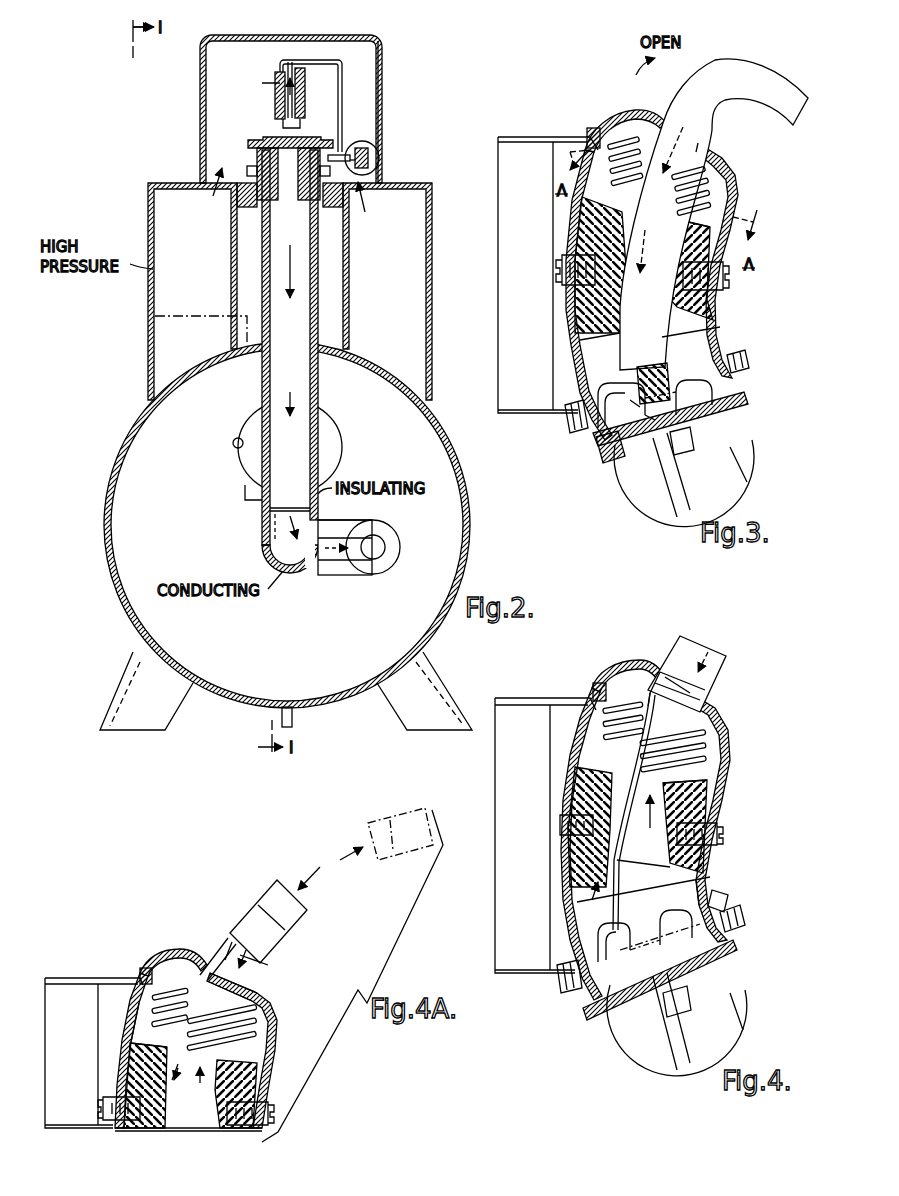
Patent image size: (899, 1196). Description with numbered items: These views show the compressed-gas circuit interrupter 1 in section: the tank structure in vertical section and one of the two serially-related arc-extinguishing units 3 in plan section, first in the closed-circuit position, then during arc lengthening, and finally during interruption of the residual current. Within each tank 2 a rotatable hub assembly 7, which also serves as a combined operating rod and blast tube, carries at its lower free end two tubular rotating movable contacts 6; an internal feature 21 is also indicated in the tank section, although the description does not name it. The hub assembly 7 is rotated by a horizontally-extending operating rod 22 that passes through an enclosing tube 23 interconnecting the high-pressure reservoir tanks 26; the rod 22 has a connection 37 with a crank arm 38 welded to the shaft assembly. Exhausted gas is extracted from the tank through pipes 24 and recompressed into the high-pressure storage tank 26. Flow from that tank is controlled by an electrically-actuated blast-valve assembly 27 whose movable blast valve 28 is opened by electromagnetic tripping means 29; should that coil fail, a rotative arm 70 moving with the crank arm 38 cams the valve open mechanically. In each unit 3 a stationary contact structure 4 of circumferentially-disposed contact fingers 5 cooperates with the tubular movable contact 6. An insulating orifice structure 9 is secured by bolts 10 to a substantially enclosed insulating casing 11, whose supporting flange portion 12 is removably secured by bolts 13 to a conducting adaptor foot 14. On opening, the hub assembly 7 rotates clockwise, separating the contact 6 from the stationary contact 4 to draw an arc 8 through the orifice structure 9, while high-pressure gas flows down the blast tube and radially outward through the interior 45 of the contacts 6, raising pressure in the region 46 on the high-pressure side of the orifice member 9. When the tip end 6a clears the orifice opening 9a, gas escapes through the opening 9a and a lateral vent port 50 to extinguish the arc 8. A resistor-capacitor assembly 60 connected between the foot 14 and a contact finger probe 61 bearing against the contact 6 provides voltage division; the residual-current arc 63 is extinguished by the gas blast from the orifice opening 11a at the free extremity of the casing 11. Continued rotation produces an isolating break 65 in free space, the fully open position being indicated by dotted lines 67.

In FIG. 2, the circuit interrupter 1 is at (398, 120).
In FIG. 2, the tank 2 is at (470, 545).
In FIG. 2, the arc-extinguishing unit 3 is at (335, 575).
In FIG. 3, the arc-extinguishing unit 3 is at (747, 334).
In FIG. 4, the arc-extinguishing unit 3 is at (747, 810).
In FIG. 4A, the arc-extinguishing unit 3 is at (137, 961).
In FIG. 3, the stationary contact structure 4 is at (676, 378).
In FIG. 4, the stationary contact structure 4 is at (670, 928).
In FIG. 3, the contact fingers 5 is at (690, 388).
In FIG. 4, the contact fingers 5 is at (626, 945).
In FIG. 2, the tubular rotating movable contact 6 is at (358, 530).
In FIG. 3, the tubular rotating movable contact 6 is at (622, 328).
In FIG. 4, the tubular rotating movable contact 6 is at (716, 677).
In FIG. 4A, the tubular rotating movable contact 6 is at (257, 897).
In FIG. 3, the tip end 6a is at (606, 449).
In FIG. 4, the tip end 6a is at (718, 724).
In FIG. 4A, the tip end 6a is at (258, 963).
In FIG. 2, the rotatable hub assembly 7 is at (327, 384).
In FIG. 4, the arc 8 is at (638, 768).
In FIG. 3, the insulating orifice structure 9 is at (703, 300).
In FIG. 4, the insulating orifice structure 9 is at (700, 818).
In FIG. 4A, the insulating orifice structure 9 is at (238, 1064).
In FIG. 3, the orifice opening 9a is at (672, 222).
In FIG. 4, the orifice opening 9a is at (716, 780).
In FIG. 4A, the orifice opening 9a is at (168, 1050).
In FIG. 3, the bolts 10 is at (730, 274).
In FIG. 4, the bolts 10 is at (560, 822).
In FIG. 4A, the bolts 10 is at (103, 1100).
In FIG. 2, the insulating casing 11 is at (322, 520).
In FIG. 4, the insulating casing 11 is at (708, 866).
In FIG. 4A, the insulating casing 11 is at (130, 1000).
In FIG. 2, the orifice opening 11a is at (382, 540).
In FIG. 3, the orifice opening 11a is at (702, 147).
In FIG. 4A, the orifice opening 11a is at (252, 978).
In FIG. 3, the supporting flange portion 12 is at (748, 358).
In FIG. 4, the supporting flange portion 12 is at (746, 914).
In FIG. 3, the bolts 13 is at (570, 436).
In FIG. 4, the bolts 13 is at (562, 985).
In FIG. 3, the adaptor foot 14 is at (740, 406).
In FIG. 4, the adaptor foot 14 is at (728, 960).
In FIG. 2, the baffle 21 is at (236, 442).
In FIG. 2, the operating rod 22 is at (366, 141).
In FIG. 2, the enclosing tube 23 is at (368, 142).
In FIG. 2, the pipes 24 is at (292, 714).
In FIG. 2, the high-pressure storage tank 26 is at (202, 251).
In FIG. 2, the blast-valve assembly 27 is at (265, 114).
In FIG. 2, the blast valve 28 is at (306, 102).
In FIG. 2, the electromagnetic tripping means 29 is at (305, 86).
In FIG. 2, the connection 37 is at (370, 157).
In FIG. 2, the crank arm 38 is at (291, 157).
In FIG. 3, the interior 45 is at (635, 377).
In FIG. 4, the interior 45 is at (663, 680).
In FIG. 3, the region 46 is at (692, 347).
In FIG. 4, the region 46 is at (604, 932).
In FIG. 3, the lateral vent port 50 is at (562, 182).
In FIG. 4, the lateral vent port 50 is at (630, 758).
In FIG. 4A, the lateral vent port 50 is at (185, 1022).
In FIG. 3, the resistor-capacitor assembly 60 is at (498, 203).
In FIG. 4, the resistor-capacitor assembly 60 is at (495, 808).
In FIG. 4A, the resistor-capacitor assembly 60 is at (66, 1128).
In FIG. 3, the contact finger probe 61 is at (662, 112).
In FIG. 4, the contact finger probe 61 is at (633, 672).
In FIG. 4A, the contact finger probe 61 is at (177, 948).
In FIG. 4A, the residual-current arc 63 is at (218, 936).
In FIG. 4A, the isolating break 65 is at (326, 866).
In FIG. 4A, the dotted lines 67 is at (366, 826).
In FIG. 2, the rotative arm 70 is at (334, 60).